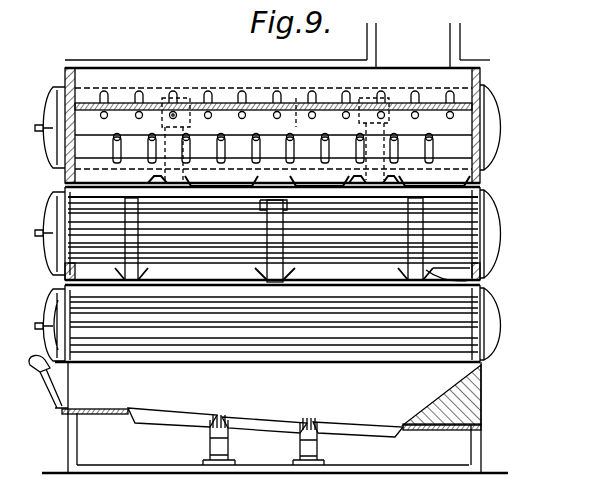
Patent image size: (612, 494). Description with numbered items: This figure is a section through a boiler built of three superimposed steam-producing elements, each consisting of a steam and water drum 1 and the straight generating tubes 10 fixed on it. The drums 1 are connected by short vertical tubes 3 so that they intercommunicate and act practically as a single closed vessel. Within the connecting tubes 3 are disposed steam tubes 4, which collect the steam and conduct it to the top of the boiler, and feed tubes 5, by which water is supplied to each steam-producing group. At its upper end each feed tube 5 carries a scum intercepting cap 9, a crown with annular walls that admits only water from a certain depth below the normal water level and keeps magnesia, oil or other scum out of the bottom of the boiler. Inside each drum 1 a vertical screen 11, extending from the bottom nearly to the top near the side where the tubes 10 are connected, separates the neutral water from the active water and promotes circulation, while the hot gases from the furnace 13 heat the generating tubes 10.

The steam and water drum 1 is at (490, 122).
The short vertical tube 3 is at (428, 279).
The steam tube 4 is at (296, 122).
The feed tube 5 is at (180, 122).
The scum intercepting cap 9 is at (162, 111).
The generating tube 10 is at (433, 149).
The vertical screen 11 is at (469, 202).
The furnace 13 is at (283, 403).